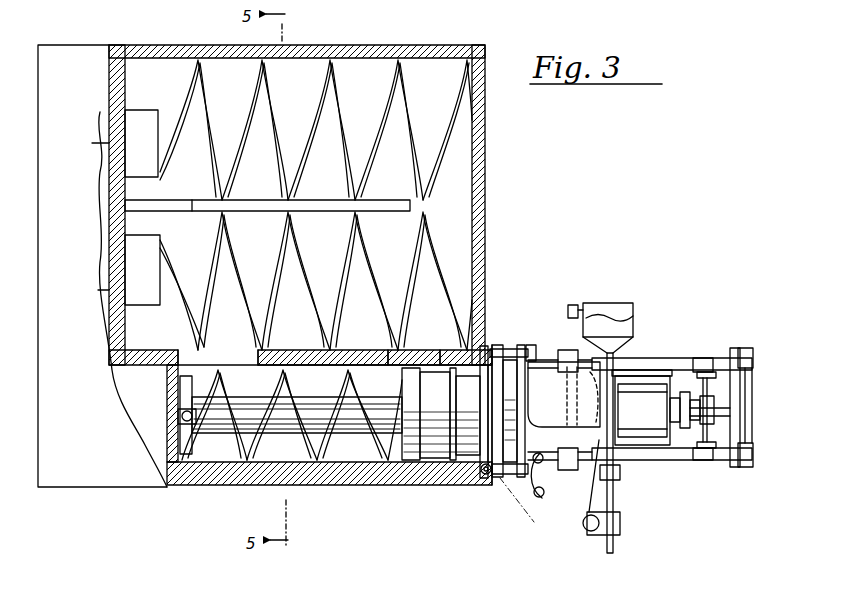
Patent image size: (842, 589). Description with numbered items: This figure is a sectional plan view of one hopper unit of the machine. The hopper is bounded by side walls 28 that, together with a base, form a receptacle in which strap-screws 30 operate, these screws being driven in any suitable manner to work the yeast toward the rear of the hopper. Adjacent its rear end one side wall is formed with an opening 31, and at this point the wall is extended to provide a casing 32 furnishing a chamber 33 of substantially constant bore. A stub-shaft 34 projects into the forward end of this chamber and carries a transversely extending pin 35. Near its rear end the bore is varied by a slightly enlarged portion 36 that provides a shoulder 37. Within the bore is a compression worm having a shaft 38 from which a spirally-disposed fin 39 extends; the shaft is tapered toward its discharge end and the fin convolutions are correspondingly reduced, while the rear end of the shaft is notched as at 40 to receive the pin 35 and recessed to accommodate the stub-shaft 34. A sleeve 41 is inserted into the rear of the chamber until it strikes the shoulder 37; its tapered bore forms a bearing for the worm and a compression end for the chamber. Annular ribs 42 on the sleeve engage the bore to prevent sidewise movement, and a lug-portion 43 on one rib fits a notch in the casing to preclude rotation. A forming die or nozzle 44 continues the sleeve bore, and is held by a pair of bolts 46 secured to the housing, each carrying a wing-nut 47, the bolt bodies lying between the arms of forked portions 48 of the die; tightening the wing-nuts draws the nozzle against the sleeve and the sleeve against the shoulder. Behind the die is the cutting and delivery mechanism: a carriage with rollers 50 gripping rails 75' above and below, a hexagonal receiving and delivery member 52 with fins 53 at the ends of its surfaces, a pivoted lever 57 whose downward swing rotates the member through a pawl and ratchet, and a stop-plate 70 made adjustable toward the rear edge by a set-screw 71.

The side walls 28 is at (487, 240).
The strap-screws 30 is at (416, 188).
The opening 31 is at (226, 360).
The casing 32 is at (278, 472).
The chamber 33 is at (217, 470).
The stub-shaft 34 is at (186, 400).
The pin 35 is at (182, 418).
The enlarged portion 36 is at (465, 484).
The shoulder 37 is at (386, 352).
The shaft 38 is at (308, 352).
The fin 39 is at (302, 440).
The notch 40 is at (182, 427).
The sleeve 41 is at (433, 485).
The annular ribs 42 is at (447, 355).
The lug-portion 43 is at (564, 394).
The forming die 44 is at (548, 380).
The bolts 46 is at (503, 348).
The wing-nut 47 is at (545, 491).
The forked portions 48 is at (526, 345).
The rollers 50 is at (706, 358).
The receiving and delivery member 52 is at (672, 410).
The fins 53 is at (653, 376).
The lever 57 is at (614, 366).
The stop-plate 70 is at (710, 424).
The set-screw 71 is at (708, 404).
The rails 75' is at (673, 400).